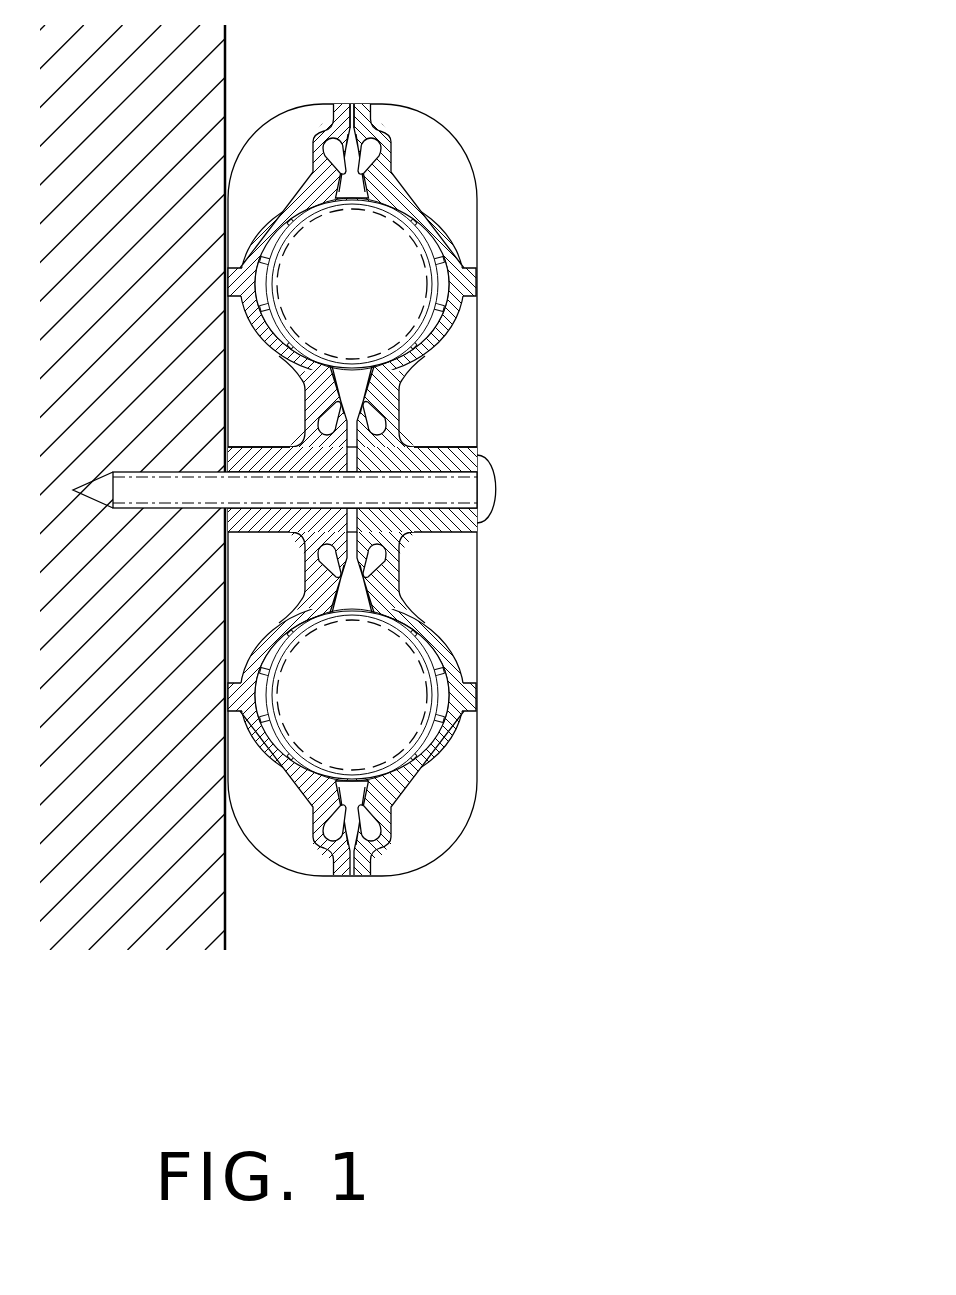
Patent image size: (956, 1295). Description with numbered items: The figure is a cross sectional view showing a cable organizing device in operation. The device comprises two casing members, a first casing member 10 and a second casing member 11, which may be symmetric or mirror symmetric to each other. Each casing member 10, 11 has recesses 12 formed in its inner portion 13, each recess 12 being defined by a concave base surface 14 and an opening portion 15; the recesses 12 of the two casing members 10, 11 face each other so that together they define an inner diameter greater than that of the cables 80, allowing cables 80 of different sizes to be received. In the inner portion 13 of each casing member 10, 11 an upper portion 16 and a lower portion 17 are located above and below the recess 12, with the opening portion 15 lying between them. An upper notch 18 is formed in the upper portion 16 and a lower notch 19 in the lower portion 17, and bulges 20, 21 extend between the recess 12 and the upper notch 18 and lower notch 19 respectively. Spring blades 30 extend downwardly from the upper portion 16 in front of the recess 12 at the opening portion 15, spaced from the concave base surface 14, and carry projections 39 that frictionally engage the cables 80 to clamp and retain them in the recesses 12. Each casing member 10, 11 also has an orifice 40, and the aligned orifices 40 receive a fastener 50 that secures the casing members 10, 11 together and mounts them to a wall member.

The first casing member 10 is at (293, 848).
The second casing member 11 is at (423, 840).
The recess 12 is at (443, 773).
The inner portion 13 is at (350, 876).
The concave base surface 14 is at (458, 712).
The opening portion 15 is at (372, 690).
The upper portion 16 is at (357, 92).
The lower portion 17 is at (480, 450).
The upper notch 18 is at (393, 153).
The lower notch 19 is at (400, 453).
The bulge 20 is at (393, 180).
The bulge 21 is at (405, 383).
The spring blade 30 is at (420, 205).
The projection 39 is at (420, 248).
The orifice 40 is at (455, 513).
The fastener 50 is at (487, 485).
The cable 80 is at (388, 412).